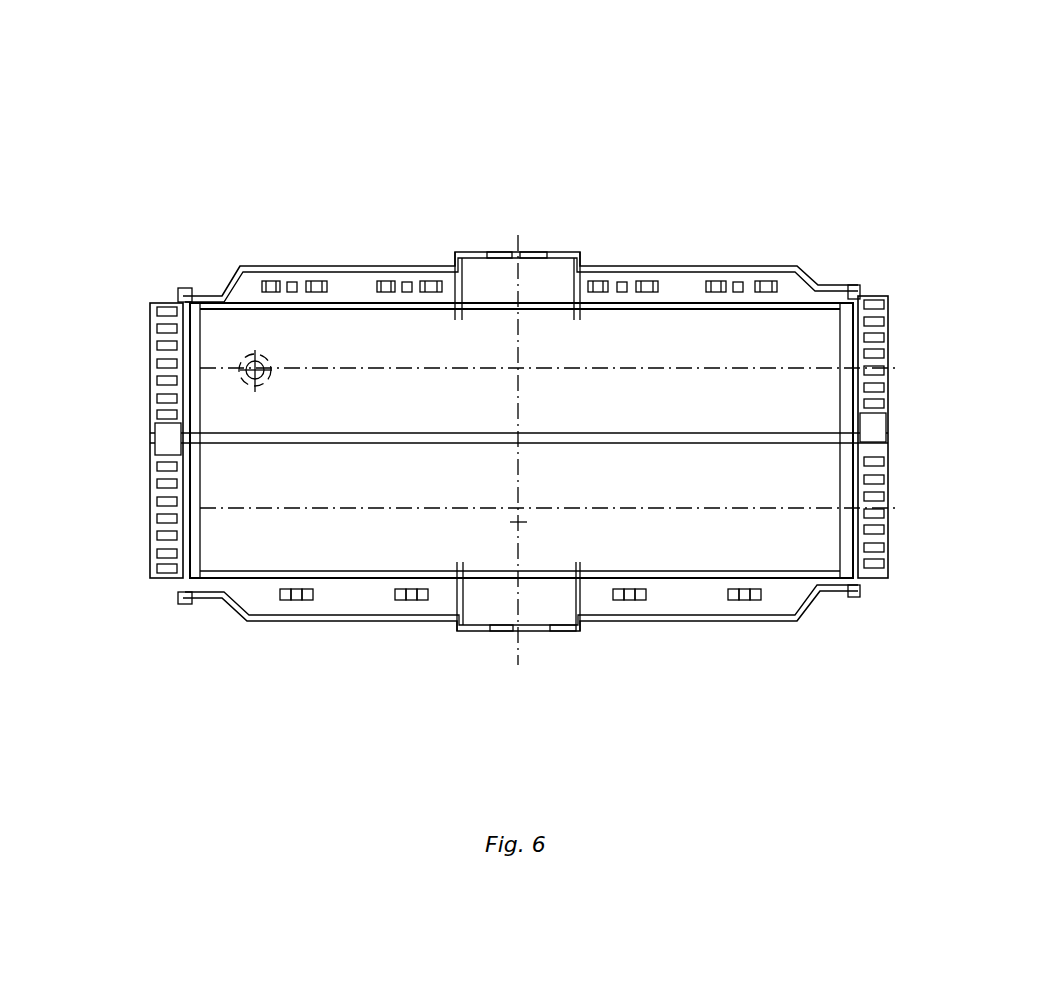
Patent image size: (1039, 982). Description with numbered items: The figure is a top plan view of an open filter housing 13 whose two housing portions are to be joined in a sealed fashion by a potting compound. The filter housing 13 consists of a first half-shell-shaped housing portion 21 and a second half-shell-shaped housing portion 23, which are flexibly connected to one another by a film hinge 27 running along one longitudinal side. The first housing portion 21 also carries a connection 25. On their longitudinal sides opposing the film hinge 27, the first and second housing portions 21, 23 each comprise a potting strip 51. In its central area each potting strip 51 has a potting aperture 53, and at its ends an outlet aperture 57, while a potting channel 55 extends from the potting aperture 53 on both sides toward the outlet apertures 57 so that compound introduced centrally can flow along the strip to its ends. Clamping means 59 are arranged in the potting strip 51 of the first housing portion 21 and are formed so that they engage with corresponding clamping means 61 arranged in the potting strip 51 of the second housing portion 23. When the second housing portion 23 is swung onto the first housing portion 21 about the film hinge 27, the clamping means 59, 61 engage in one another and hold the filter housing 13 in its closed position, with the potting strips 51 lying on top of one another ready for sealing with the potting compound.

The filter housing 13 is at (196, 100).
The first half-shell-shaped housing portion 21 is at (306, 330).
The second half-shell-shaped housing portion 23 is at (272, 540).
The connection 25 is at (238, 368).
The film hinge 27 is at (237, 437).
The potting strip 51 is at (662, 278).
The potting aperture 53 is at (505, 262).
The potting channel 55 is at (256, 290).
The outlet aperture 57 is at (185, 296).
The clamping means 59 is at (283, 290).
The clamping means 61 is at (290, 602).